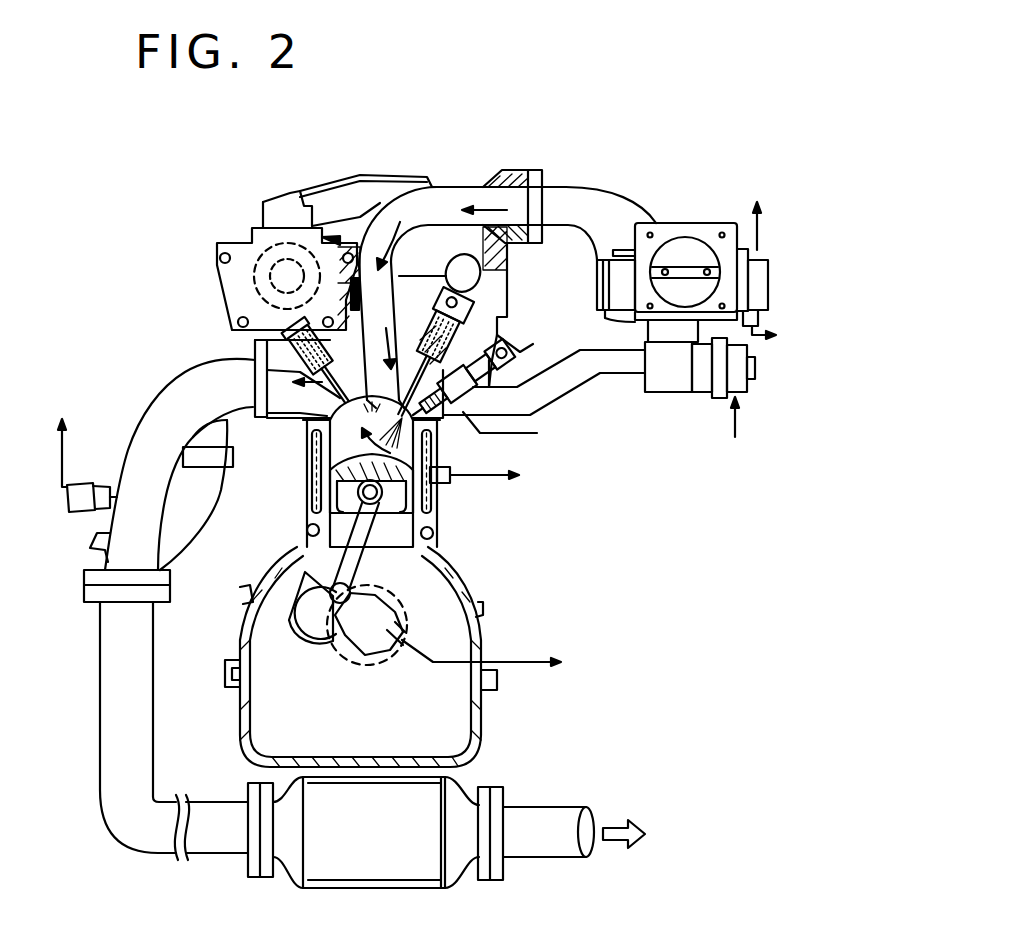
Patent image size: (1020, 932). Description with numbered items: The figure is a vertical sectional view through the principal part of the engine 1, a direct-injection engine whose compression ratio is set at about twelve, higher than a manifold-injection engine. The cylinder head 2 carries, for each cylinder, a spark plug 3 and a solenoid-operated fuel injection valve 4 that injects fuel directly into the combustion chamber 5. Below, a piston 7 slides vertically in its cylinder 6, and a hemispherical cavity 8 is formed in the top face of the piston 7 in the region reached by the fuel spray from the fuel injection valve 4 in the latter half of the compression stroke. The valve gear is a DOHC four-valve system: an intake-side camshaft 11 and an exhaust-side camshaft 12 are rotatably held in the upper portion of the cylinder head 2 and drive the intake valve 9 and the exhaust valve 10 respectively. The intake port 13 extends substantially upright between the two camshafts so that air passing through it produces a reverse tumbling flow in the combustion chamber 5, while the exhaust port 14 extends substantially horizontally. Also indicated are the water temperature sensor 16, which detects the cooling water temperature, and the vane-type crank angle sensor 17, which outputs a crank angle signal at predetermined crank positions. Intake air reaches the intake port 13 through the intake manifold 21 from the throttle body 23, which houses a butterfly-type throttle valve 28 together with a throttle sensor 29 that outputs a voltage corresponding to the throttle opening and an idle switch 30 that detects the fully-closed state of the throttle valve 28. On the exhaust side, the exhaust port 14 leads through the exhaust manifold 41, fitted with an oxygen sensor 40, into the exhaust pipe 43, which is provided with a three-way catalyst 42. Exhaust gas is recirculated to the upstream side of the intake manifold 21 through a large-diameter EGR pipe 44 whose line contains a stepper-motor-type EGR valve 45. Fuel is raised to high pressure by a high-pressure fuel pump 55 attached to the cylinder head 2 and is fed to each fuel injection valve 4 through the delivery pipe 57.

The engine 1 is at (510, 536).
The cylinder head 2 is at (483, 337).
The spark plug 3 is at (335, 240).
The fuel injection valve 4 is at (449, 406).
The combustion chamber 5 is at (330, 457).
The cylinder 6 is at (432, 508).
The piston 7 is at (313, 488).
The hemispherical cavity 8 is at (435, 450).
The intake valve 9 is at (500, 337).
The exhaust valve 10 is at (262, 372).
The intake-side camshaft 11 is at (470, 270).
The exhaust-side camshaft 12 is at (282, 262).
The intake port 13 is at (383, 293).
The exhaust port 14 is at (283, 396).
The water temperature sensor 16 is at (451, 482).
The crank angle sensor 17 is at (405, 632).
The intake manifold 21 is at (568, 186).
The throttle body 23 is at (709, 224).
The throttle valve 28 is at (682, 243).
The throttle sensor 29 is at (768, 276).
The idle switch 30 is at (762, 322).
The O2 sensor 40 is at (85, 482).
The exhaust manifold 41 is at (155, 390).
The three-way catalyst 42 is at (383, 878).
The exhaust pipe 43 is at (150, 714).
The EGR pipe 44 is at (597, 365).
The EGR valve 45 is at (666, 386).
The high-pressure fuel pump 55 is at (252, 302).
The delivery pipe 57 is at (522, 365).